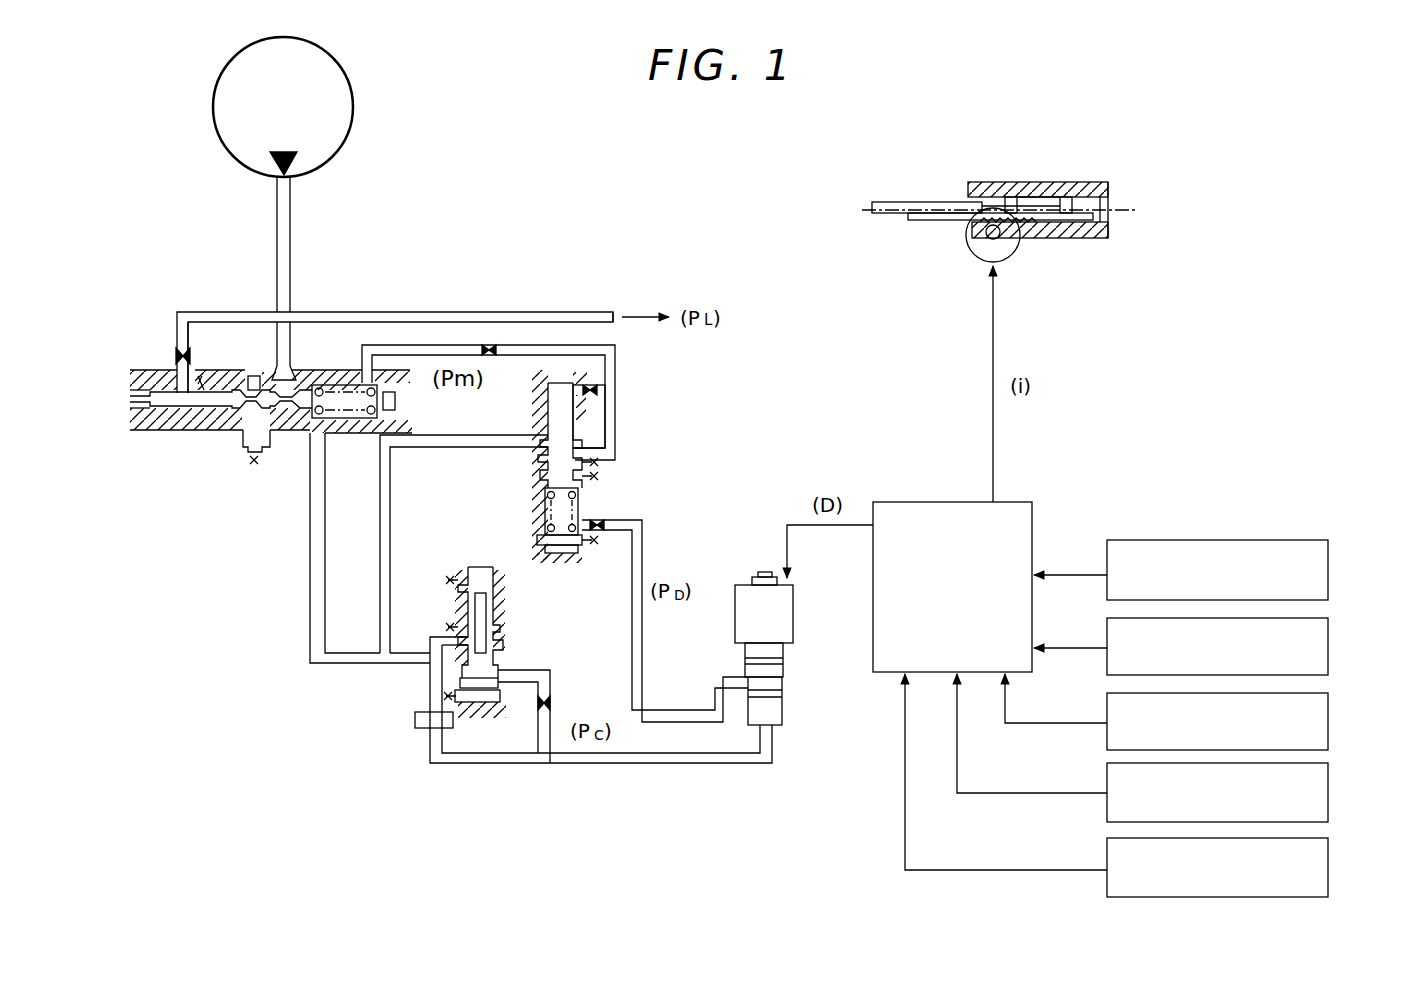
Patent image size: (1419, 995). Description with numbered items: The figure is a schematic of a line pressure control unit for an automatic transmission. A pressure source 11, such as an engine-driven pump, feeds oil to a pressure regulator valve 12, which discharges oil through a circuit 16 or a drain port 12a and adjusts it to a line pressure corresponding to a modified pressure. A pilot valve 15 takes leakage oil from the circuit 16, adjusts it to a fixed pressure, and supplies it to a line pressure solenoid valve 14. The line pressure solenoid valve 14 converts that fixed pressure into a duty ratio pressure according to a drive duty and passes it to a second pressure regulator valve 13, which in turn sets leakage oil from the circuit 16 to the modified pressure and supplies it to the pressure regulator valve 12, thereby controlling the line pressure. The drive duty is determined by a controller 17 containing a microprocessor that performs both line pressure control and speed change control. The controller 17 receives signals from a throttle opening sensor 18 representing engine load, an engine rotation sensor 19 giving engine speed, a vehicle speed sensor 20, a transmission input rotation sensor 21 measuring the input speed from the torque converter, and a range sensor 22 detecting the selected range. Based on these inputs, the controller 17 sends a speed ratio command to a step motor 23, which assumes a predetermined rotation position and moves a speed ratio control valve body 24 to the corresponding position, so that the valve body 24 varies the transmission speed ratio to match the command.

The pressure source 11 is at (355, 108).
The pressure regulator valve 12 is at (240, 442).
The drain port 12a is at (264, 440).
The pressure regulator valve 13 is at (602, 497).
The line pressure solenoid valve 14 is at (793, 628).
The pilot valve 15 is at (516, 634).
The circuit 16 is at (380, 615).
The controller 17 is at (945, 500).
The throttle opening sensor 18 is at (1328, 575).
The engine rotation sensor 19 is at (1328, 652).
The vehicle speed sensor 20 is at (1328, 724).
The transmission input rotation sensor 21 is at (1328, 798).
The range sensor 22 is at (1328, 872).
The step motor 23 is at (990, 234).
The speed ratio control valve body 24 is at (922, 203).